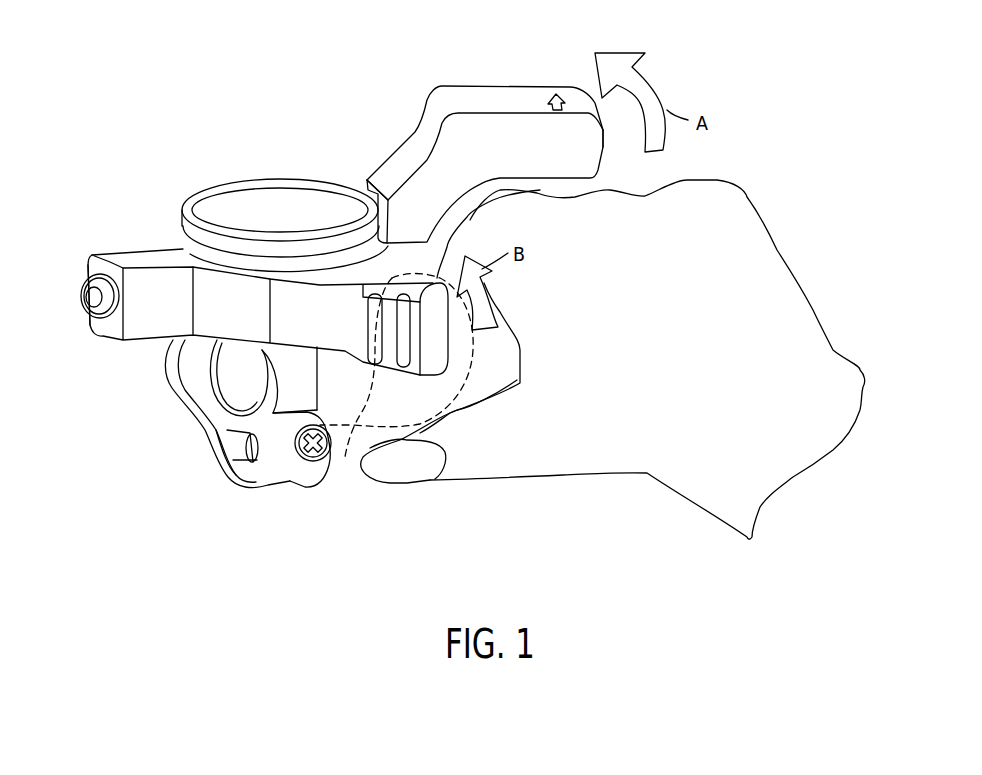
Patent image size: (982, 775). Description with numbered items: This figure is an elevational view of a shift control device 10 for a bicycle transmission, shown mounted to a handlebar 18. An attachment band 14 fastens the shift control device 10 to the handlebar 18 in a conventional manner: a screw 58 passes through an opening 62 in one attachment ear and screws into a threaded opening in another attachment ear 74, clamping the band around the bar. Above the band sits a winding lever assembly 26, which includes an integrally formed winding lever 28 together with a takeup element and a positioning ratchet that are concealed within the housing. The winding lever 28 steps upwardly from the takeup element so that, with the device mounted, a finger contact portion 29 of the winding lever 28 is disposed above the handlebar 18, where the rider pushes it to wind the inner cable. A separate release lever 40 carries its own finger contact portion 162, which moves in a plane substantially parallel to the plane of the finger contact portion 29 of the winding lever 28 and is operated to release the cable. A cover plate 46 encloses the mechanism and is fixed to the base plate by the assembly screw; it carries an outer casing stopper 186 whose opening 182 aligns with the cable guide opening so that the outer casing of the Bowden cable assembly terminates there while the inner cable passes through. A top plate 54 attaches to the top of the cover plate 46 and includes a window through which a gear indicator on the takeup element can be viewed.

The shift control device 10 is at (87, 363).
The attachment band 14 is at (170, 387).
The handlebar 18 is at (396, 379).
The winding lever assembly 26 is at (462, 65).
The winding lever 28 is at (387, 157).
The finger contact portion 29 is at (593, 160).
The release lever 40 is at (330, 342).
The cover plate 46 is at (147, 245).
The top plate 54 is at (214, 192).
The screw 58 is at (322, 465).
The opening 62 is at (285, 487).
The attachment ear 74 is at (222, 473).
The finger contact portion 162 is at (390, 362).
The opening 182 is at (83, 306).
The outer casing stopper 186 is at (93, 263).